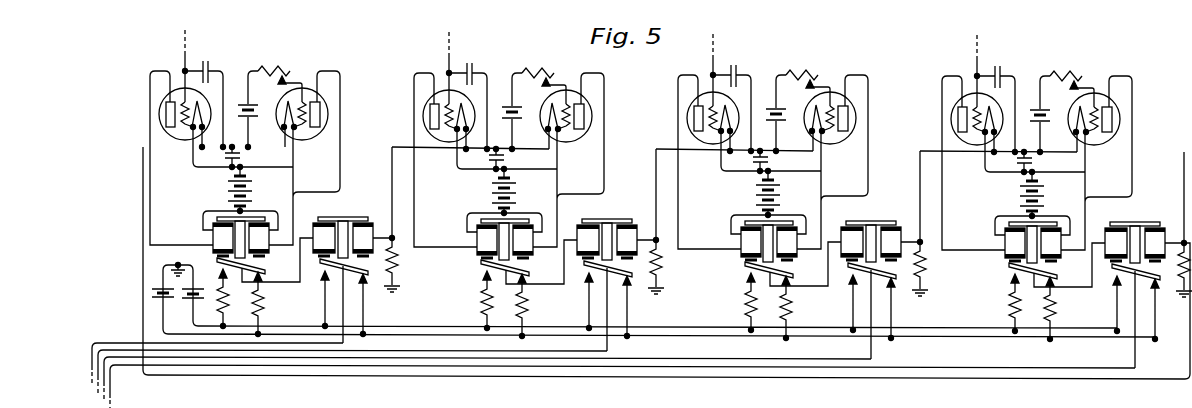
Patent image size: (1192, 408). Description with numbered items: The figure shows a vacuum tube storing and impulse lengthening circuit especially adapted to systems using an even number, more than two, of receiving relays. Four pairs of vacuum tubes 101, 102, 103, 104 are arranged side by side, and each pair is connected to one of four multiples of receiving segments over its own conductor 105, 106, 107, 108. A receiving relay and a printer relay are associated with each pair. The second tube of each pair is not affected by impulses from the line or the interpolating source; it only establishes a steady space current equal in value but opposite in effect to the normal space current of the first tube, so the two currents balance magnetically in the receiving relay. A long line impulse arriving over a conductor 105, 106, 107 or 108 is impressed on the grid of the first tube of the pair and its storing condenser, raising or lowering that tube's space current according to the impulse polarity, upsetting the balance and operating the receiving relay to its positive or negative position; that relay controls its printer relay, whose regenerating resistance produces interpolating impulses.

The pair of vacuum tubes 101 is at (263, 68).
The pair of vacuum tubes 102 is at (543, 69).
The pair of vacuum tubes 103 is at (808, 70).
The pair of vacuum tubes 104 is at (1073, 71).
The conductor 105 is at (186, 56).
The conductor 106 is at (457, 86).
The conductor 107 is at (723, 87).
The conductor 108 is at (985, 87).